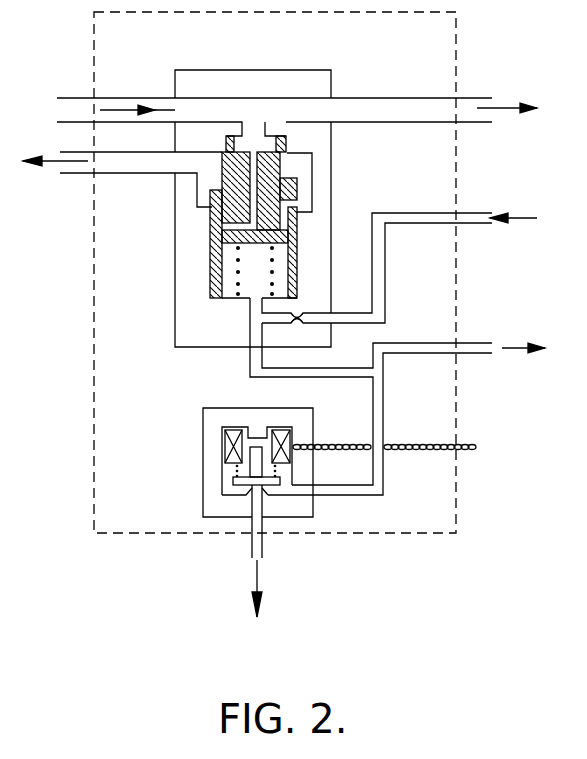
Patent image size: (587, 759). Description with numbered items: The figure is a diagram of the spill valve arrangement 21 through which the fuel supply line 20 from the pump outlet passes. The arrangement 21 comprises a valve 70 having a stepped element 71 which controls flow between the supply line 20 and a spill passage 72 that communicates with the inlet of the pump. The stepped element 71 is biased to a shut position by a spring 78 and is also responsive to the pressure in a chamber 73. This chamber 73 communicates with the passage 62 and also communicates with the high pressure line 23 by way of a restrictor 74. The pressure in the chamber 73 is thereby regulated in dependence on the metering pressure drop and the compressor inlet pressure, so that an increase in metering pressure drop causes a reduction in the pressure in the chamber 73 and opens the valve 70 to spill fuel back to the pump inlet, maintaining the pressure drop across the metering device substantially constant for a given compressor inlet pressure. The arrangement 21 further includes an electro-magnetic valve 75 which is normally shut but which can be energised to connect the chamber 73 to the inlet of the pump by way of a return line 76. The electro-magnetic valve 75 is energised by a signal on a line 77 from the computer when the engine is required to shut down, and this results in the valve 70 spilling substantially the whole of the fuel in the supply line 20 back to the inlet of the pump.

The supply line 20 is at (458, 114).
The spill valve arrangement 21 is at (143, 515).
The high pressure line 23 is at (471, 222).
The passage 62 is at (475, 348).
The valve 70 is at (155, 261).
The stepped element 71 is at (285, 186).
The spill passage 72 is at (92, 165).
The chamber 73 is at (292, 278).
The restrictor 74 is at (300, 311).
The electro-magnetic valve 75 is at (192, 458).
The return line 76 is at (258, 550).
The line 77 is at (463, 446).
The spring 78 is at (213, 297).